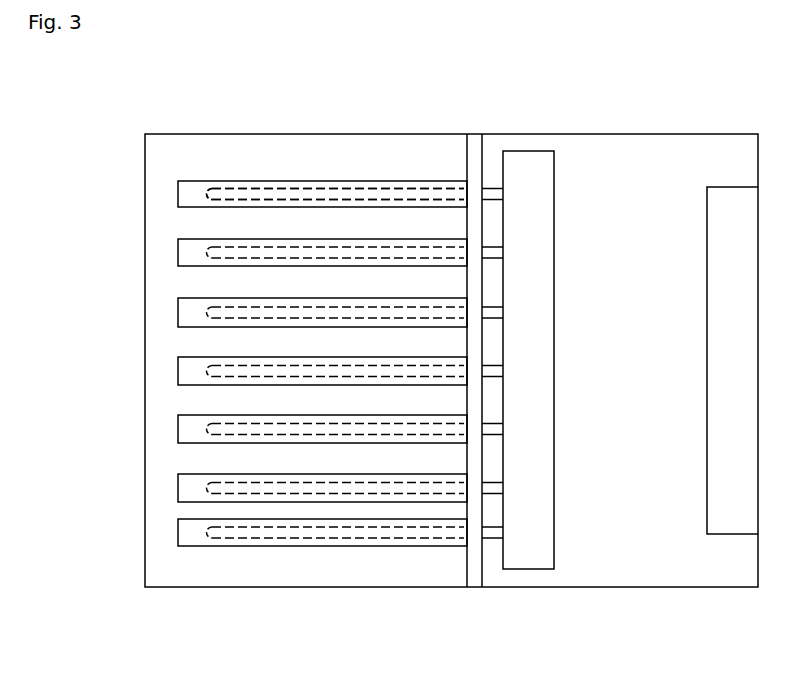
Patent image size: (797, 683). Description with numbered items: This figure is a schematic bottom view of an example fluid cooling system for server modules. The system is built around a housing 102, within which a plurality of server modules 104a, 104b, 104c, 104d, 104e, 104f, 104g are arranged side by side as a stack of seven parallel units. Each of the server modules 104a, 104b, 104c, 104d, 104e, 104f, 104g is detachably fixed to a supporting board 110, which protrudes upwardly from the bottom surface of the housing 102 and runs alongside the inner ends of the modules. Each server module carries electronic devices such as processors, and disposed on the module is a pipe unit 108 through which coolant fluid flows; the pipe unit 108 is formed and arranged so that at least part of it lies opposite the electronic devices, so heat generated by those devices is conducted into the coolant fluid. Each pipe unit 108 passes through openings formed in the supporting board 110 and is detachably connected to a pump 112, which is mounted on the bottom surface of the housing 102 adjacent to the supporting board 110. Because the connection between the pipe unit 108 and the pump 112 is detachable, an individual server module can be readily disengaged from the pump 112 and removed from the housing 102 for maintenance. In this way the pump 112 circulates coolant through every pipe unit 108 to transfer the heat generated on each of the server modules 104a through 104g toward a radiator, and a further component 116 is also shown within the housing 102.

The housing 102 is at (183, 147).
The server module 104a is at (178, 200).
The server module 104b is at (178, 258).
The server module 104c is at (178, 318).
The server module 104d is at (178, 377).
The server module 104e is at (178, 435).
The server module 104f is at (178, 494).
The server module 104g is at (178, 543).
The pipe unit 108 is at (293, 188).
The supporting board 110 is at (475, 148).
The pump 112 is at (531, 558).
The contact pad 116 is at (727, 193).